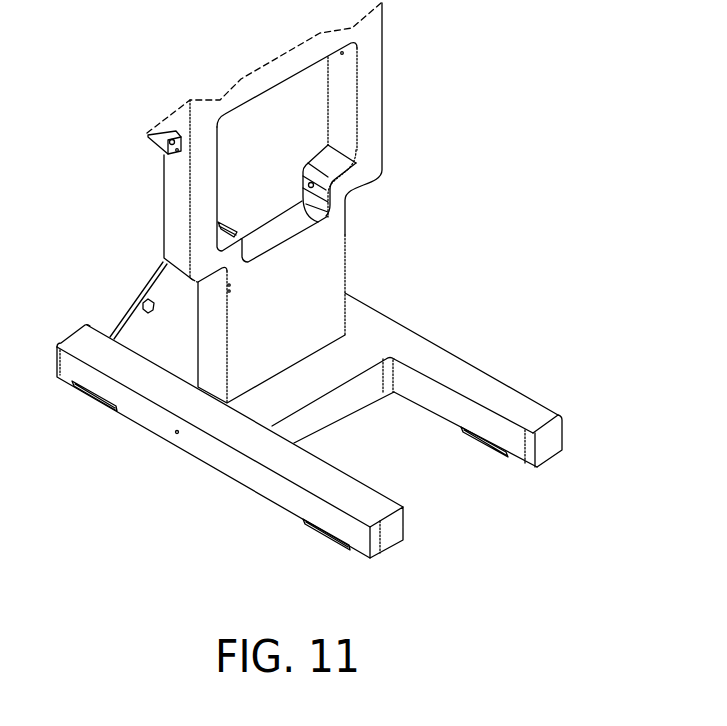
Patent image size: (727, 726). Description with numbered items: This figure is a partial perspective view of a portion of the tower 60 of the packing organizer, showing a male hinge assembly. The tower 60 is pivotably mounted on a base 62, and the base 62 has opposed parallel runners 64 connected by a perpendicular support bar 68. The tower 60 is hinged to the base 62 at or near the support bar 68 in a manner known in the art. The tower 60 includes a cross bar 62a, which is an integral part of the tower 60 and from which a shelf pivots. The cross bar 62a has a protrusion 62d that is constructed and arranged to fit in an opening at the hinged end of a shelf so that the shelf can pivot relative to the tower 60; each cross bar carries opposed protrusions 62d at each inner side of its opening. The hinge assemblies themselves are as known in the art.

The tower 60 is at (289, 203).
The base 62 is at (326, 425).
The cross bar 62a is at (322, 193).
The protrusion 62d is at (308, 184).
The runner 64 is at (540, 402).
The support bar 68 is at (320, 430).